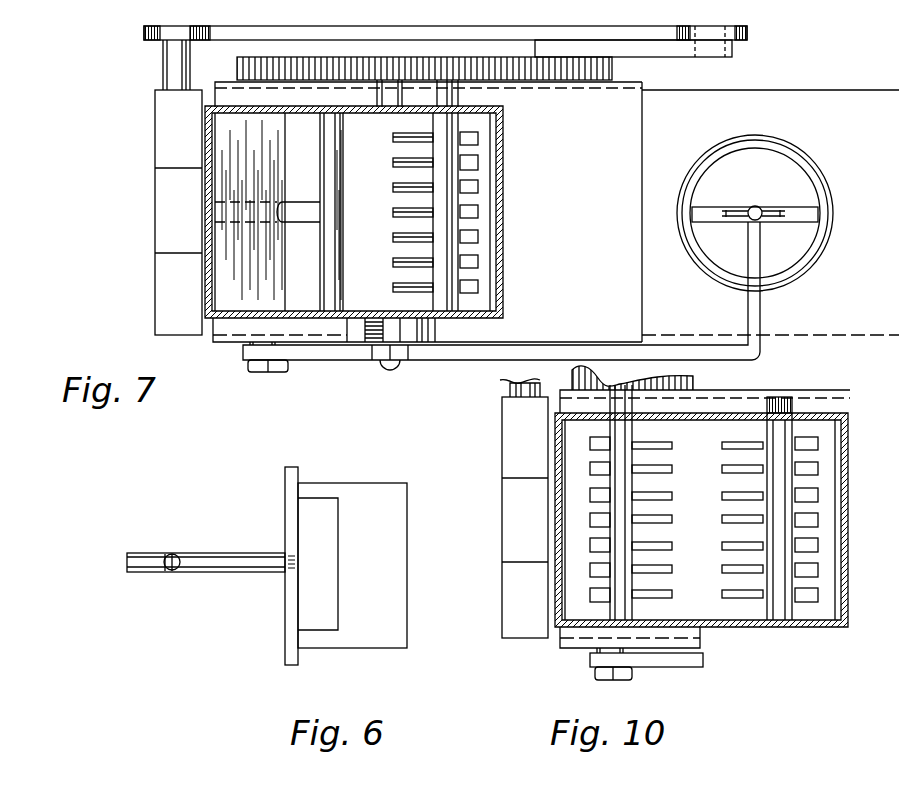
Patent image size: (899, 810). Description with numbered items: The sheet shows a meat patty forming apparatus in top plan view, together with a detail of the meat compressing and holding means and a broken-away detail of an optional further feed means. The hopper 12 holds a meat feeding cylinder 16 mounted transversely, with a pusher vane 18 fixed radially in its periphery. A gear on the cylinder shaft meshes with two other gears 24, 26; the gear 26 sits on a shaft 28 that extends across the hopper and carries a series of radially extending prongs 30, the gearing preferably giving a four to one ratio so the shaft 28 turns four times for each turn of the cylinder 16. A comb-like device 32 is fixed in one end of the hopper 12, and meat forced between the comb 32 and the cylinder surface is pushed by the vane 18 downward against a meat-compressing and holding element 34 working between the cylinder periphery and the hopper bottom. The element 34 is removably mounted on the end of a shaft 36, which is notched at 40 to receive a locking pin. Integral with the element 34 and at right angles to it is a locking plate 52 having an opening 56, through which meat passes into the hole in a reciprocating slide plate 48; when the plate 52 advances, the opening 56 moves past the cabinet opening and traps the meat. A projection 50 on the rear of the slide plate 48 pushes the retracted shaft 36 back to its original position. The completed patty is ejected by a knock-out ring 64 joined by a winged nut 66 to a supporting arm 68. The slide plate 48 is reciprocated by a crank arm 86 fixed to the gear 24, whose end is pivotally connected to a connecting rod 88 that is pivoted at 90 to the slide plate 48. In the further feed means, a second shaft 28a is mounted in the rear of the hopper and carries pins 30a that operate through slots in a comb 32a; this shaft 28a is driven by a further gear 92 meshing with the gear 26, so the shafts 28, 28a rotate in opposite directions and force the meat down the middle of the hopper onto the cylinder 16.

In FIG. 7, the hopper 12 is at (497, 281).
In FIG. 10, the hopper 12 is at (803, 621).
In FIG. 7, the meat feeding cylinder 16 is at (320, 247).
In FIG. 7, the pusher vane 18 is at (342, 223).
In FIG. 7, the gear 24 is at (518, 63).
In FIG. 7, the gear 26 is at (433, 57).
In FIG. 7, the shaft 28 is at (447, 240).
In FIG. 10, the shaft 28 is at (790, 405).
In FIG. 10, the second shaft 28a is at (625, 432).
In FIG. 7, the prongs 30 is at (400, 235).
In FIG. 10, the prongs 30 is at (740, 597).
In FIG. 10, the pins 30a is at (672, 520).
In FIG. 7, the comb-like device 32 is at (477, 182).
In FIG. 10, the comb-like device 32 is at (825, 492).
In FIG. 10, the comb 32a is at (579, 600).
In FIG. 6, the meat-compressing and holding element 34 is at (290, 508).
In FIG. 6, the shaft 36 is at (205, 566).
In FIG. 6, the notch 40 is at (174, 554).
In FIG. 7, the reciprocating slide plate 48 is at (170, 127).
In FIG. 10, the reciprocating slide plate 48 is at (518, 608).
In FIG. 7, the projection 50 is at (170, 212).
In FIG. 10, the projection 50 is at (512, 530).
In FIG. 6, the locking plate 52 is at (366, 500).
In FIG. 6, the opening 56 is at (315, 595).
In FIG. 7, the ring 64 is at (810, 175).
In FIG. 7, the winged nut 66 is at (740, 212).
In FIG. 7, the supporting arm 68 is at (687, 355).
In FIG. 7, the crank arm 86 is at (690, 50).
In FIG. 7, the connecting rod 88 is at (283, 33).
In FIG. 7, the pivot connection 90 is at (167, 60).
In FIG. 10, the further gear 92 is at (677, 380).